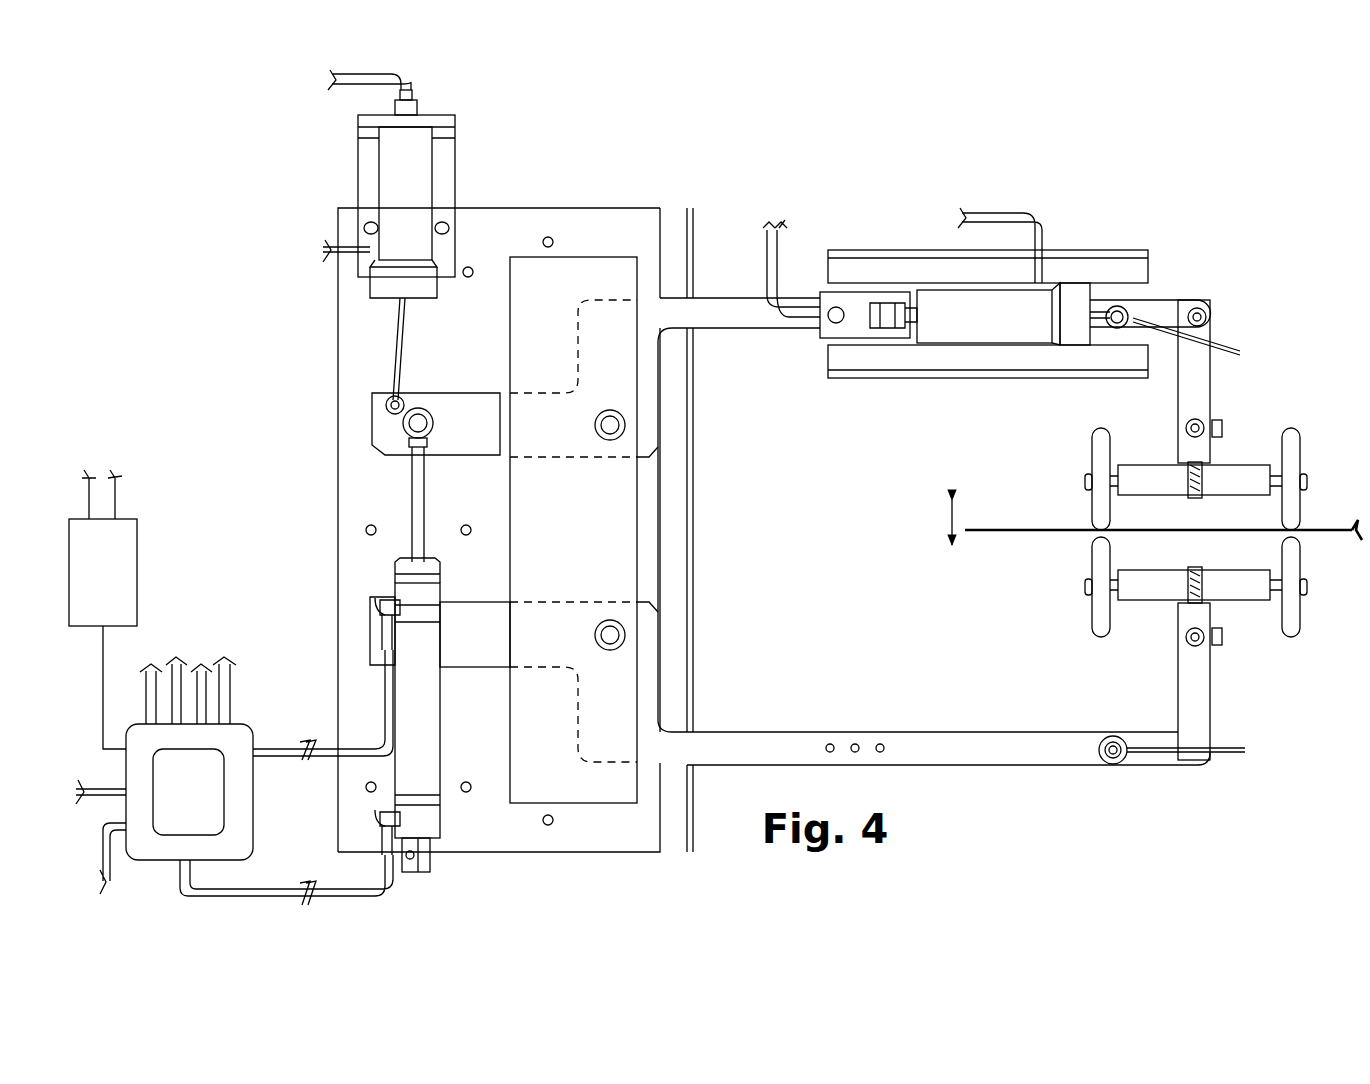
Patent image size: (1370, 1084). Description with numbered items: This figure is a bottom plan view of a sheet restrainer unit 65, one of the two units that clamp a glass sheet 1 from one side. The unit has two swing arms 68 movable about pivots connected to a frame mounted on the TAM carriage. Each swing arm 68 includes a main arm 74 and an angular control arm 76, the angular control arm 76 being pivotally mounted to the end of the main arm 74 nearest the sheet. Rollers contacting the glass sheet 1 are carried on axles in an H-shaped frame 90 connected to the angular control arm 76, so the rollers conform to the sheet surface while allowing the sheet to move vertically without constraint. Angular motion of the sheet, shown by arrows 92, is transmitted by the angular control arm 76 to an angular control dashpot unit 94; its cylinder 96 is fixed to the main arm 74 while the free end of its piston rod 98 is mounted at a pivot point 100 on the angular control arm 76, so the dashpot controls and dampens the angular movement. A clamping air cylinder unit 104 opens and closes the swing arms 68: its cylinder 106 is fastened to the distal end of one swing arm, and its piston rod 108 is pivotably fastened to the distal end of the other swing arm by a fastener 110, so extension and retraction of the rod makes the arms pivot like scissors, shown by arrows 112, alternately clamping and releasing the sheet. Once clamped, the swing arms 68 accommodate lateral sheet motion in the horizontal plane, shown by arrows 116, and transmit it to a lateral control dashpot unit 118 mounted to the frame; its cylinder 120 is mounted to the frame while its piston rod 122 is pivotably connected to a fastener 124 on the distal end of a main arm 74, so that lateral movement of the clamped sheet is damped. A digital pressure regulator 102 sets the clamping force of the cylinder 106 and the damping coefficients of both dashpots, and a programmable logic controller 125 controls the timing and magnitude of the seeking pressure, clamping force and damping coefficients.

The web strip 1 is at (1325, 530).
The sheet restrainer unit 65 is at (258, 292).
The swing arms 68 is at (805, 285).
The main arm 74 is at (700, 313).
The angular control arm 76 is at (1200, 377).
The H-shaped frame 90 is at (1142, 590).
The arrows 92 is at (1272, 397).
The angular control dashpot unit 94 is at (1072, 222).
The cylinder 96 is at (968, 325).
The piston rod 98 is at (1168, 304).
The pivot point 100 is at (1215, 315).
The digital pressure regulator 102 is at (135, 855).
The clamping air cylinder unit 104 is at (452, 822).
The cylinder 106 is at (418, 690).
The piston rod 108 is at (418, 512).
The fastener 110 is at (420, 420).
The arrows 112 is at (524, 390).
The arrows 116 is at (948, 522).
The lateral control dashpot unit 118 is at (462, 190).
The cylinder 120 is at (415, 175).
The piston rod 122 is at (403, 340).
The fastener 124 is at (390, 400).
The programmable logic controller 125 is at (108, 600).